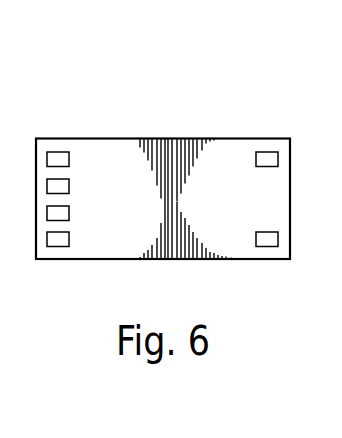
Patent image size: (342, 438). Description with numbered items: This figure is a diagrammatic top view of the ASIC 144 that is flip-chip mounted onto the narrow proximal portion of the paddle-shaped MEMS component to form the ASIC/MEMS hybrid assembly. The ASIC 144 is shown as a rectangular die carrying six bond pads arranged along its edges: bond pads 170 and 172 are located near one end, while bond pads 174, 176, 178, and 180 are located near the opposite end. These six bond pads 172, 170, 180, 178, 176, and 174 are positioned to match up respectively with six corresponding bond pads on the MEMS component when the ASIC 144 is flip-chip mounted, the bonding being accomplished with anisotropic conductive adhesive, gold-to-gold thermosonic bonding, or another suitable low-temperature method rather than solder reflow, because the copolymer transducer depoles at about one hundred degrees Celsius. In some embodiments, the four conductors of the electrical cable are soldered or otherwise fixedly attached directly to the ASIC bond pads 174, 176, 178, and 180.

The ASIC 144 is at (174, 78).
The bond pad 170 is at (268, 152).
The bond pad 172 is at (267, 247).
The bond pad 174 is at (58, 152).
The bond pad 176 is at (69, 187).
The bond pad 178 is at (69, 213).
The bond pad 180 is at (57, 247).